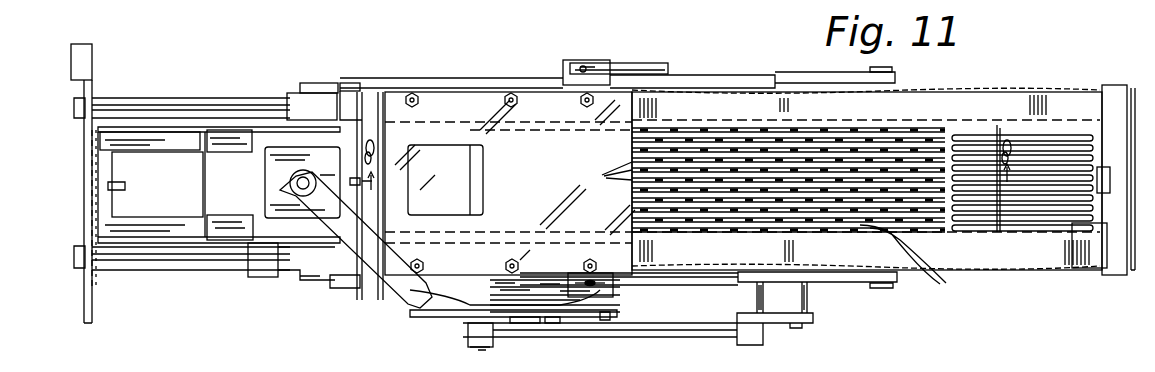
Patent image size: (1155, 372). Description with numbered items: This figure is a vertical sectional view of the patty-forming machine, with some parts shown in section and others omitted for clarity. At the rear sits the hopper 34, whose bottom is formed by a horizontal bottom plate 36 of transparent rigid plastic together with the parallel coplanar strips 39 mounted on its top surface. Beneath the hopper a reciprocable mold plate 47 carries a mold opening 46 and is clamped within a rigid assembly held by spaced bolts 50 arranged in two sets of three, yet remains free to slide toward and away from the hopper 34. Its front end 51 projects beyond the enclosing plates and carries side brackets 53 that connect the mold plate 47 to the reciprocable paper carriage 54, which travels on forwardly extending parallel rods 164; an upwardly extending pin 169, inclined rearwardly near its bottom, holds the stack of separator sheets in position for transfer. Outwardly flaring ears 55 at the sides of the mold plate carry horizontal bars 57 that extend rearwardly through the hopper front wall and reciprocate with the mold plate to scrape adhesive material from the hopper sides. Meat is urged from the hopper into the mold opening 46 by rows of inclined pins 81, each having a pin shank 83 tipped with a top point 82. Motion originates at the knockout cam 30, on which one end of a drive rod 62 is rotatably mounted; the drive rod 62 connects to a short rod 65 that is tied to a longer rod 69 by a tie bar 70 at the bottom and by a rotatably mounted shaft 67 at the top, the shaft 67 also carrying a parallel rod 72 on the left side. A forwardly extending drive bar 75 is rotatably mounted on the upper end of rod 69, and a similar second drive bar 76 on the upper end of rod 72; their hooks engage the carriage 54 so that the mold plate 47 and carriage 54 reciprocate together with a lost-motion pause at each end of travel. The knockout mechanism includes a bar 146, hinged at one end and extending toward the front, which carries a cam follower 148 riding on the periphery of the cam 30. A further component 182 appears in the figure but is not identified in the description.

The parallel rods 164 is at (163, 103).
The pin 169 is at (125, 187).
The paper carriage 54 is at (271, 280).
The lever 182 is at (382, 226).
The side brackets 53 is at (328, 82).
The front end of the mold plate 51 is at (358, 120).
The mold plate 47 is at (510, 183).
The bolts 50 is at (584, 97).
The mold opening 46 is at (440, 149).
The second drive bar 76 is at (708, 76).
The rod 72 is at (893, 84).
The ears 55 is at (598, 62).
The horizontal bar 57 is at (657, 64).
The bottom plate 36 is at (930, 134).
The pin shank 83 is at (893, 135).
The strips 39 is at (1060, 198).
The pins 81 is at (605, 172).
The top point 82 is at (910, 262).
The long rod 69 is at (897, 284).
The drive bar 75 is at (640, 286).
The knockout bar 146 is at (450, 315).
The knockout cam 30 is at (470, 325).
The hopper 34 is at (600, 346).
The cam follower 148 is at (568, 316).
The drive rod 62 is at (574, 333).
The tie bar 70 is at (748, 311).
The shaft 67 is at (801, 303).
The short rod 65 is at (777, 318).